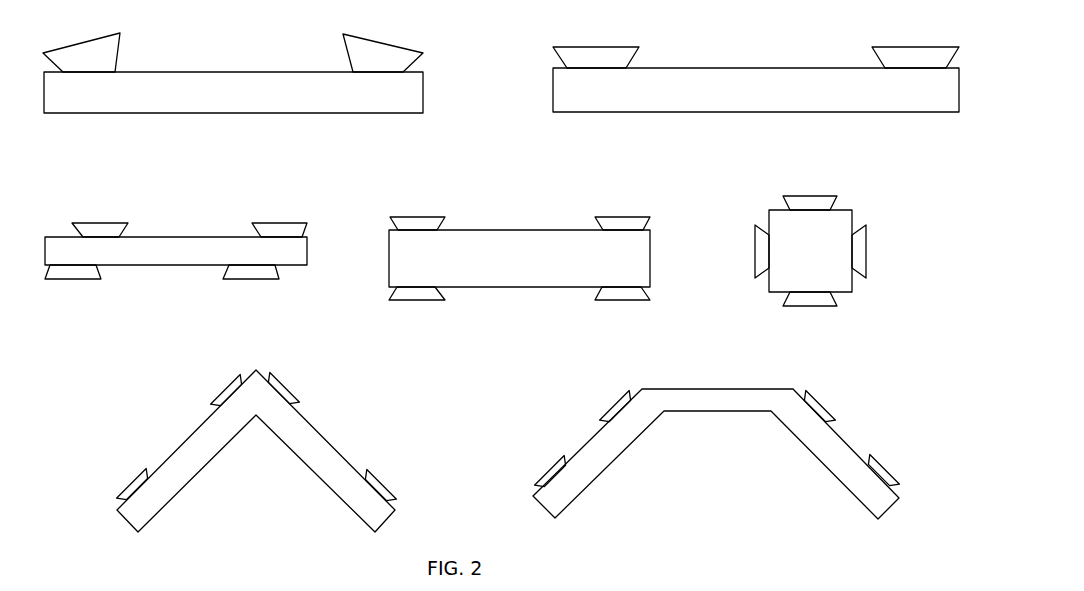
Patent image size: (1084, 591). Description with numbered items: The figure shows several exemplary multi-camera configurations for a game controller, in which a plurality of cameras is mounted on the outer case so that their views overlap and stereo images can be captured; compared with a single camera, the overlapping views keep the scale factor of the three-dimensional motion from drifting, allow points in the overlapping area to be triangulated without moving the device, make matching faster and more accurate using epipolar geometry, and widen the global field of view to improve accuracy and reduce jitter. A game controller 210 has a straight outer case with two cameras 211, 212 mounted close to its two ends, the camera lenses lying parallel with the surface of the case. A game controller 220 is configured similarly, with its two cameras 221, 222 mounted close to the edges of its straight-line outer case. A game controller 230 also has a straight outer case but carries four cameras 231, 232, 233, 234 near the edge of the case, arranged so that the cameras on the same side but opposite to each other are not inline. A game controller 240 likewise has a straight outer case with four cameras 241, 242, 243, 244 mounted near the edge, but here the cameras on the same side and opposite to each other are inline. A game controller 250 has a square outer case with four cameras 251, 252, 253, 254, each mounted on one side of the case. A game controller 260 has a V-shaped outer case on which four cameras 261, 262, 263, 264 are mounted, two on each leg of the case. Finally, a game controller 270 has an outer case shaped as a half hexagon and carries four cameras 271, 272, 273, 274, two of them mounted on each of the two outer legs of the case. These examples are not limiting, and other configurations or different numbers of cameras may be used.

The game controller 210 is at (218, 72).
The camera 211 is at (120, 35).
The contact pad 212 is at (344, 35).
The game controller 220 is at (709, 69).
The contact pad 221 is at (597, 47).
The contact pad 222 is at (894, 47).
The game controller 230 is at (162, 237).
The camera 231 is at (92, 223).
The camera 232 is at (273, 223).
The camera 233 is at (65, 282).
The camera 234 is at (257, 282).
The game controller 240 is at (492, 230).
The camera 241 is at (413, 220).
The camera 242 is at (617, 220).
The camera 243 is at (410, 300).
The camera 244 is at (615, 300).
The game controller 250 is at (810, 251).
The camera 251 is at (797, 200).
The camera 252 is at (753, 250).
The camera 253 is at (862, 248).
The camera 254 is at (803, 307).
The game controller 260 is at (256, 417).
The camera 261 is at (223, 390).
The camera 262 is at (133, 483).
The camera 263 is at (280, 388).
The camera 264 is at (370, 473).
The game controller 270 is at (722, 411).
The contact pad 271 is at (605, 413).
The contact pad 272 is at (547, 470).
The contact pad 273 is at (820, 405).
The contact pad 274 is at (877, 465).